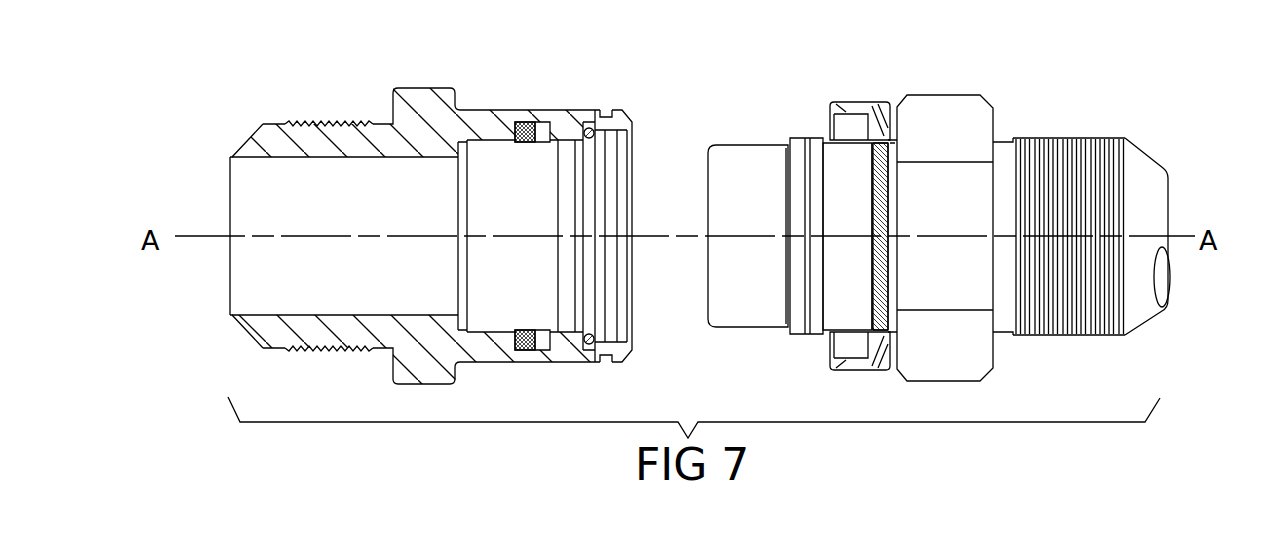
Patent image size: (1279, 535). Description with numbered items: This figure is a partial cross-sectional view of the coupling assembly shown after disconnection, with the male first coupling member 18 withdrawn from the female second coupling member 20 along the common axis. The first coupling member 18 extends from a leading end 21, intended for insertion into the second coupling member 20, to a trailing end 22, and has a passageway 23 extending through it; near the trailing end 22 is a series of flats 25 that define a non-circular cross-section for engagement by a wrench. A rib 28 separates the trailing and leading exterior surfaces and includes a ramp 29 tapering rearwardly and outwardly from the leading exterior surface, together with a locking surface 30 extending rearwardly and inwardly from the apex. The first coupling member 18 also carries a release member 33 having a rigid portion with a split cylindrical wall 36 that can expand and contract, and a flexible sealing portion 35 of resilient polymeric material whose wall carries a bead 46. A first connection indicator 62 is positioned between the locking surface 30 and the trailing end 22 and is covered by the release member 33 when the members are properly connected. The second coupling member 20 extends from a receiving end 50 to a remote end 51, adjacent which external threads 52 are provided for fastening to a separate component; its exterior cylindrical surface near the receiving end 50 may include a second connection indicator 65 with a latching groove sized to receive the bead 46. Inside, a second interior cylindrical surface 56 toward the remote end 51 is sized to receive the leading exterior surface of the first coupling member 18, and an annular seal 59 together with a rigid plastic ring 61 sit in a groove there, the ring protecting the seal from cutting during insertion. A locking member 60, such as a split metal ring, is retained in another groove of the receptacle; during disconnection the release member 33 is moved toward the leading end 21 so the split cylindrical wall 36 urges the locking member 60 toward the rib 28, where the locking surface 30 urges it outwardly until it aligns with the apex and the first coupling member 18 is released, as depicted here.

The first coupling member 18 is at (1018, 120).
The second coupling member 20 is at (415, 73).
The leading end 21 is at (708, 243).
The trailing end 22 is at (1170, 179).
The passageway 23 is at (1165, 285).
The flats 25 is at (967, 254).
The rib 28 is at (799, 146).
The ramp 29 is at (786, 195).
The locking surface 30 is at (812, 215).
The release member 33 is at (878, 77).
The sealing portion 35 is at (832, 370).
The split cylindrical wall 36 is at (843, 333).
The bead 46 is at (830, 126).
The receiving end 50 is at (632, 125).
The remote end 51 is at (230, 305).
The external threads 52 is at (309, 122).
The second interior cylindrical surface 56 is at (490, 142).
The annular seal 59 is at (530, 122).
The locking member 60 is at (596, 112).
The rigid plastic ring 61 is at (547, 333).
The first connection indicator 62 is at (873, 245).
The second connection indicator 65 is at (604, 111).